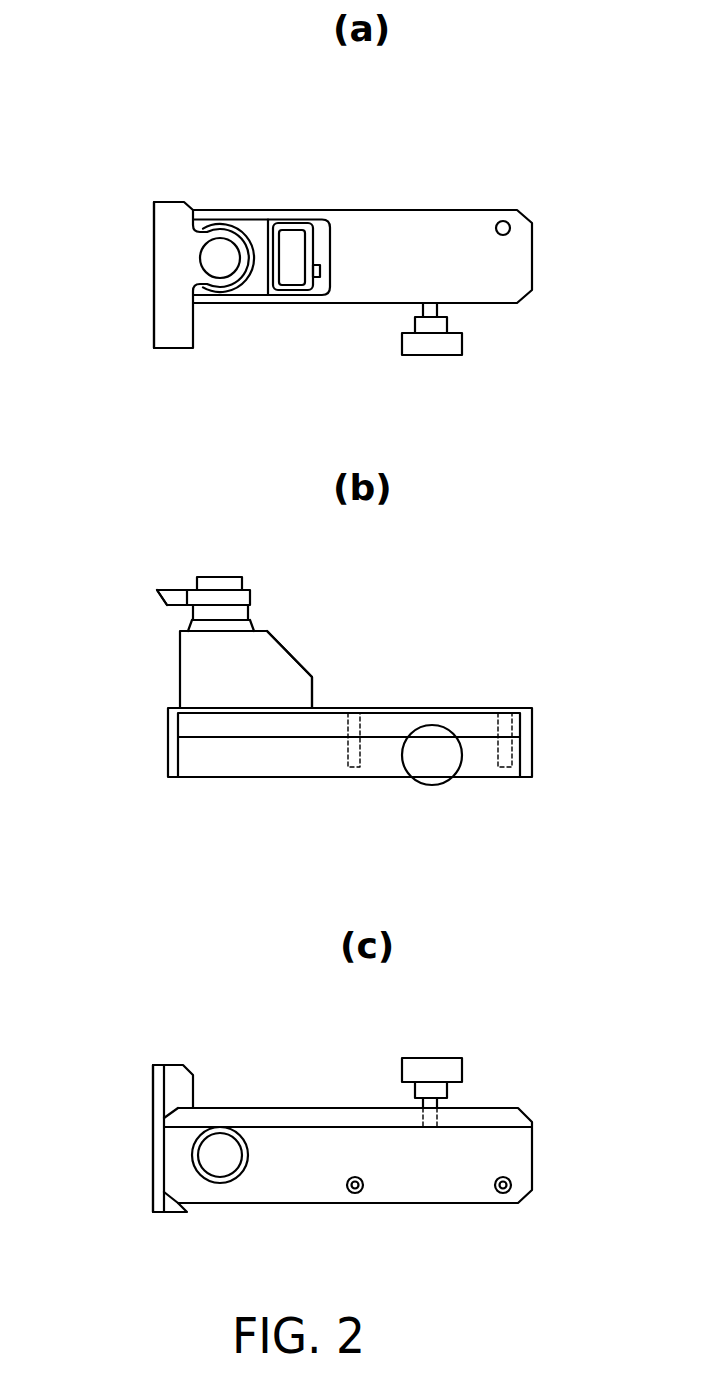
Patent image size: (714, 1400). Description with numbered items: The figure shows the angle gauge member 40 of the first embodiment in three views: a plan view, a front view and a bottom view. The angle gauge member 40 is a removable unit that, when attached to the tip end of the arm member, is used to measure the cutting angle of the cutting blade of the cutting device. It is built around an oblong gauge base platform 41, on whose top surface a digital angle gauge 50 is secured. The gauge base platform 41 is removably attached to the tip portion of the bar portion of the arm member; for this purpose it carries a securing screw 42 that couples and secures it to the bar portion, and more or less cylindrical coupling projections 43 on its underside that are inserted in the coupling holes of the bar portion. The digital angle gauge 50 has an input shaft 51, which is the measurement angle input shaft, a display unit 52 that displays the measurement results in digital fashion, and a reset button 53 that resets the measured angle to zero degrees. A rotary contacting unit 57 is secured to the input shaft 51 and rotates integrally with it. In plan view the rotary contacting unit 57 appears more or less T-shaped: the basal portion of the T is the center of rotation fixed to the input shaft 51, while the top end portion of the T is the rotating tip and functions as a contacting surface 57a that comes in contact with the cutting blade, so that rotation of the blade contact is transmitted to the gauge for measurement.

The angle gauge member 40 is at (313, 163).
The gauge base platform 41 is at (367, 305).
The securing screw 42 is at (433, 347).
The coupling projections 43 is at (341, 752).
The digital angle gauge 50 is at (252, 228).
The input shaft 51 is at (222, 266).
The display unit 52 is at (278, 296).
The reset button 53 is at (316, 274).
The rotary contacting unit 57 is at (183, 203).
The contacting surface 57a is at (152, 262).